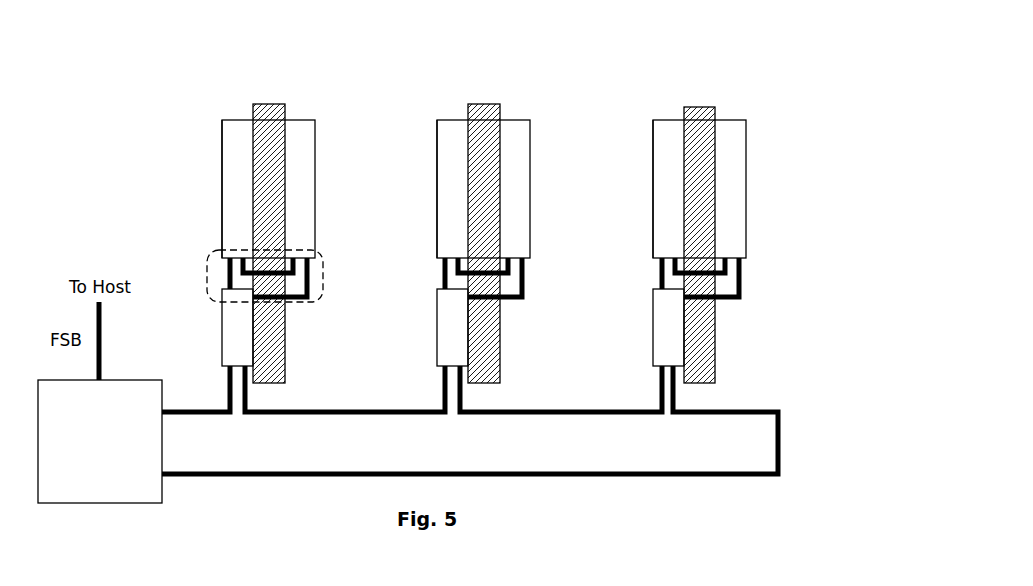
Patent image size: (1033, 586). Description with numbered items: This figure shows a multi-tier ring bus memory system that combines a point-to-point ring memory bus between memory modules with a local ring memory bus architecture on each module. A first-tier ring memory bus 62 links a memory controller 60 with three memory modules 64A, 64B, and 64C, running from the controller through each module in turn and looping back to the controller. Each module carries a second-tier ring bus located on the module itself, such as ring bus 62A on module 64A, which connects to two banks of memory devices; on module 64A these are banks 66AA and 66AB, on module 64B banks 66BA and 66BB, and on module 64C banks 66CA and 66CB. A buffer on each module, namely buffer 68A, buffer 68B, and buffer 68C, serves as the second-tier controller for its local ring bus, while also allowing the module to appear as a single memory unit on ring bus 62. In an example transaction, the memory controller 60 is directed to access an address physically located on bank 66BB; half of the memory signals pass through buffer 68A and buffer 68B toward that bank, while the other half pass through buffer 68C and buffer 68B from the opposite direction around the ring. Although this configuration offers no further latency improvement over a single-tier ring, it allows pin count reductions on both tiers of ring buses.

The memory controller 60 is at (90, 476).
The ring bus 62 is at (603, 453).
The ring bus 62A is at (207, 274).
The memory module 64A is at (268, 104).
The memory module 64B is at (483, 104).
The memory module 64C is at (699, 107).
The bank 66AA is at (222, 203).
The bank 66AB is at (315, 150).
The bank 66BA is at (437, 203).
The bank 66BB is at (530, 150).
The bank 66CA is at (653, 203).
The bank 66CB is at (746, 152).
The buffer 68A is at (222, 350).
The buffer 68B is at (437, 350).
The buffer 68C is at (653, 350).